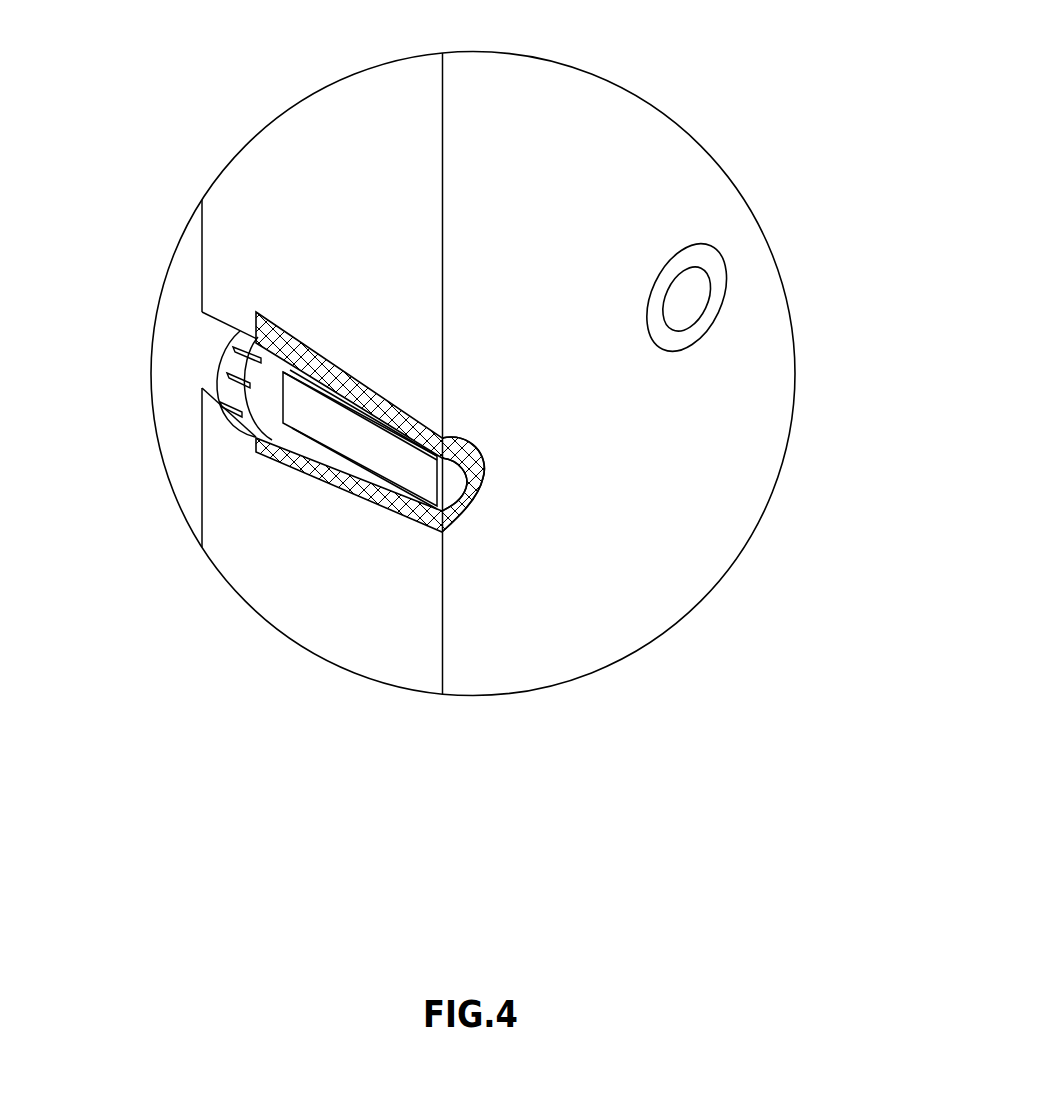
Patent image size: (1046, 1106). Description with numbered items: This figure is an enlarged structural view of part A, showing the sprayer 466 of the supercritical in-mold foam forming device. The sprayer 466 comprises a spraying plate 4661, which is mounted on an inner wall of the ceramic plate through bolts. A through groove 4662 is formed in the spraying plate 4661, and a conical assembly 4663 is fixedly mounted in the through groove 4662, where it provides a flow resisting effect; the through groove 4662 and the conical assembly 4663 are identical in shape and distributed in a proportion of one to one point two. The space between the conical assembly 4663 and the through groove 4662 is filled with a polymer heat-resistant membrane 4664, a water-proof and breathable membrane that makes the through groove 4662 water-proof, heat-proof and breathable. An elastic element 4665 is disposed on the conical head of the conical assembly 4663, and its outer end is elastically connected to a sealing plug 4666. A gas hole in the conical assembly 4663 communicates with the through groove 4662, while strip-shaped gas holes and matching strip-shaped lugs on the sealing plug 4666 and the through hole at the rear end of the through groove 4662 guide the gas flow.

The part A is at (585, 70).
The sprayer 466 is at (661, 401).
The spraying plate 4661 is at (712, 515).
The through groove 4662 is at (237, 353).
The conical assembly 4663 is at (306, 445).
The polymer heat-resistant membrane 4664 is at (427, 482).
The elastic element 4665 is at (443, 520).
The sealing plug 4666 is at (237, 413).